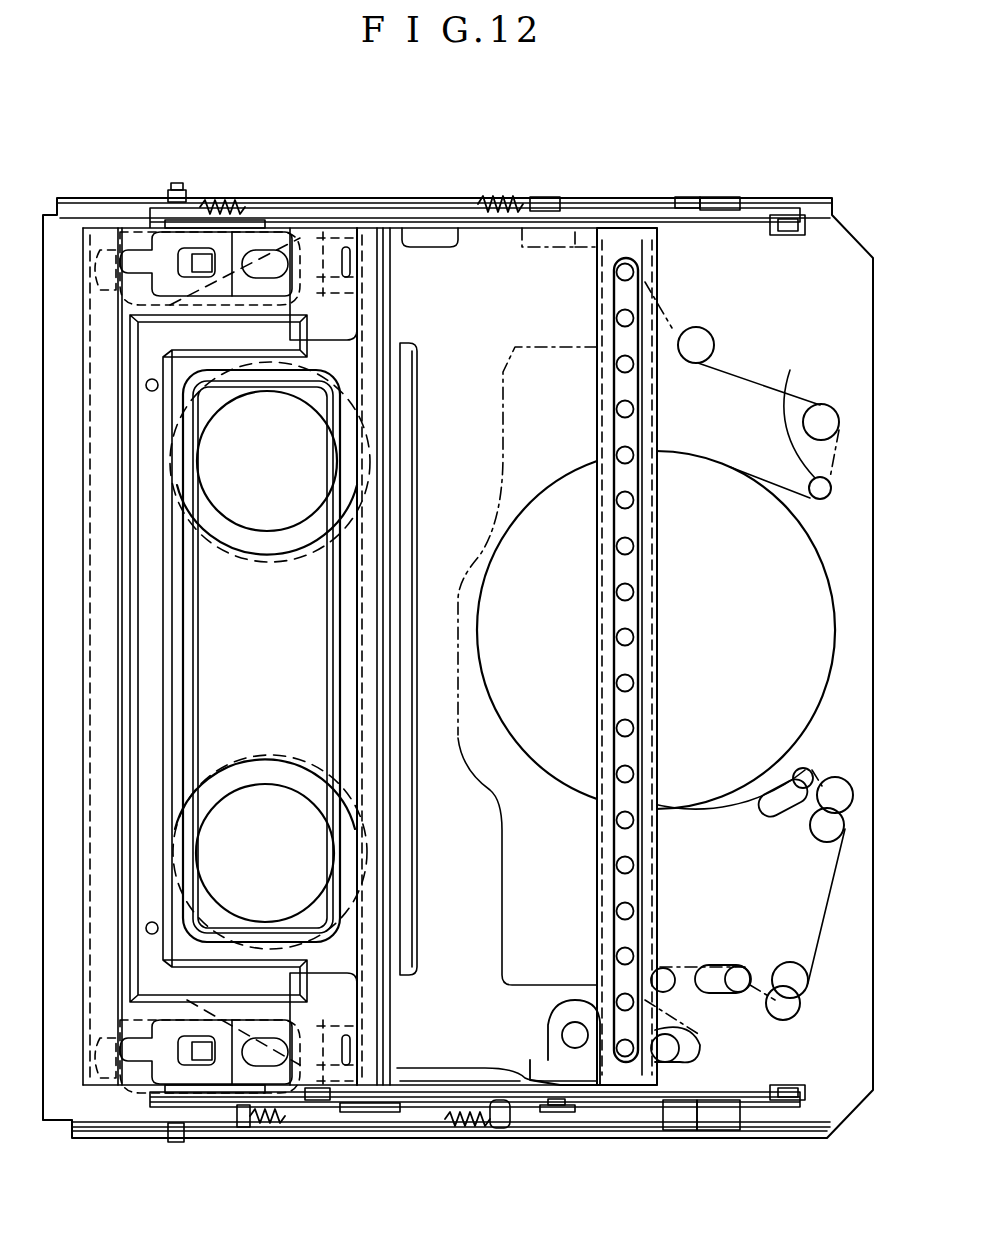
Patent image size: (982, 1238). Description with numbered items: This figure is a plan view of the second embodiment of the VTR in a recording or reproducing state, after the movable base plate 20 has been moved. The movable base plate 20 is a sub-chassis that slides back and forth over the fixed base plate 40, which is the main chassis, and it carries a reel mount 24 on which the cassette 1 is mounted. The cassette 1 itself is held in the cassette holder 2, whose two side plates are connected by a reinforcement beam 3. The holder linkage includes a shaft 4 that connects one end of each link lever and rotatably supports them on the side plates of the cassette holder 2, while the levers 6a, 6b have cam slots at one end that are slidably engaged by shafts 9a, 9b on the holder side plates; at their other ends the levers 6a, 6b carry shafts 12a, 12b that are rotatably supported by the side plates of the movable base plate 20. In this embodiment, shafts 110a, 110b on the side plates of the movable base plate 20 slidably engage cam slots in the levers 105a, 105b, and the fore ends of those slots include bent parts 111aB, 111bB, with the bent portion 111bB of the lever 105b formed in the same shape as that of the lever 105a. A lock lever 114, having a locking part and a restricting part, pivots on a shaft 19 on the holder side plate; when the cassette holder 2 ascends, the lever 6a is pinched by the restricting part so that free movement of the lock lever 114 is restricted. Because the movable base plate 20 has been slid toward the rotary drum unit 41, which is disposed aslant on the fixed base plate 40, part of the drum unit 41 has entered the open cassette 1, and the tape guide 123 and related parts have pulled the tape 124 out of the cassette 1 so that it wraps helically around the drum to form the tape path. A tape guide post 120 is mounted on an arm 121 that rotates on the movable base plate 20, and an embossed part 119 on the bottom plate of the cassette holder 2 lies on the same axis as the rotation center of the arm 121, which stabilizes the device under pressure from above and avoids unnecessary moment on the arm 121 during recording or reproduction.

The cassette 1 is at (503, 445).
The cassette holder 2 is at (414, 770).
The reinforcement beam 3 is at (640, 566).
The shaft 4 is at (372, 298).
The lever 6a is at (430, 1105).
The lever 6b is at (410, 203).
The shaft 9a is at (565, 1108).
The shaft 9b is at (548, 197).
The shaft 12a is at (178, 1144).
The shaft 12b is at (178, 183).
The shaft 19 is at (318, 1110).
The movable base plate 20 is at (115, 1138).
The reel mount 24 is at (278, 520).
The fixed base plate 40 is at (832, 1050).
The rotary drum unit 41 is at (810, 592).
The lever 105a is at (752, 1100).
The lever 105b is at (722, 205).
The shaft 110a is at (668, 1115).
The shaft 110b is at (683, 197).
The bent part 111aB is at (790, 1100).
The bent portion 111bB is at (792, 215).
The lock lever 114 is at (352, 1112).
The embossed part 119 is at (575, 1050).
The tape guide post 120 is at (698, 1042).
The arm 121 is at (560, 1000).
The tape guide 123 is at (820, 405).
The tape 124 is at (742, 378).